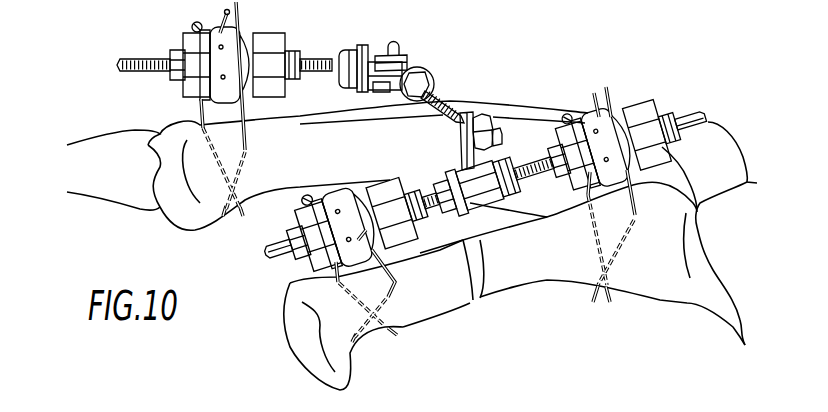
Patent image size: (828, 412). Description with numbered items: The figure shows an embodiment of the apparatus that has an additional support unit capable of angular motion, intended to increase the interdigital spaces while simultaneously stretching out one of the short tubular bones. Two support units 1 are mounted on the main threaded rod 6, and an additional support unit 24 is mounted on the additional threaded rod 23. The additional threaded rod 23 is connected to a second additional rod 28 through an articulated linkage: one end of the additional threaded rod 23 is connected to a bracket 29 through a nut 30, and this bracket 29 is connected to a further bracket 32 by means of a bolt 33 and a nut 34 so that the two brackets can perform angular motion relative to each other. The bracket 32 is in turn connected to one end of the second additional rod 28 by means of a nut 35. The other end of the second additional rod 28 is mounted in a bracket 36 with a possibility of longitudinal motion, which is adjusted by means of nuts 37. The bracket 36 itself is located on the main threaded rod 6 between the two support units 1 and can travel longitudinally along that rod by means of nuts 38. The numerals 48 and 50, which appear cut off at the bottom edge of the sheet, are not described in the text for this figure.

The support unit 1 is at (637, 104).
The main threaded rod 6 is at (272, 257).
The additional threaded rod 23 is at (124, 85).
The additional support unit 24 is at (263, 42).
The second additional rod 28 is at (439, 96).
The bracket 29 is at (364, 45).
The nut 30 is at (341, 50).
The bracket 32 is at (426, 68).
The bolt 33 is at (374, 89).
The nut 34 is at (401, 52).
The nut 35 is at (434, 90).
The bracket 36 is at (462, 151).
The nuts 37 is at (472, 114).
The nuts 38 is at (519, 182).
The bone 48 is at (80, 405).
The bone 50 is at (527, 405).